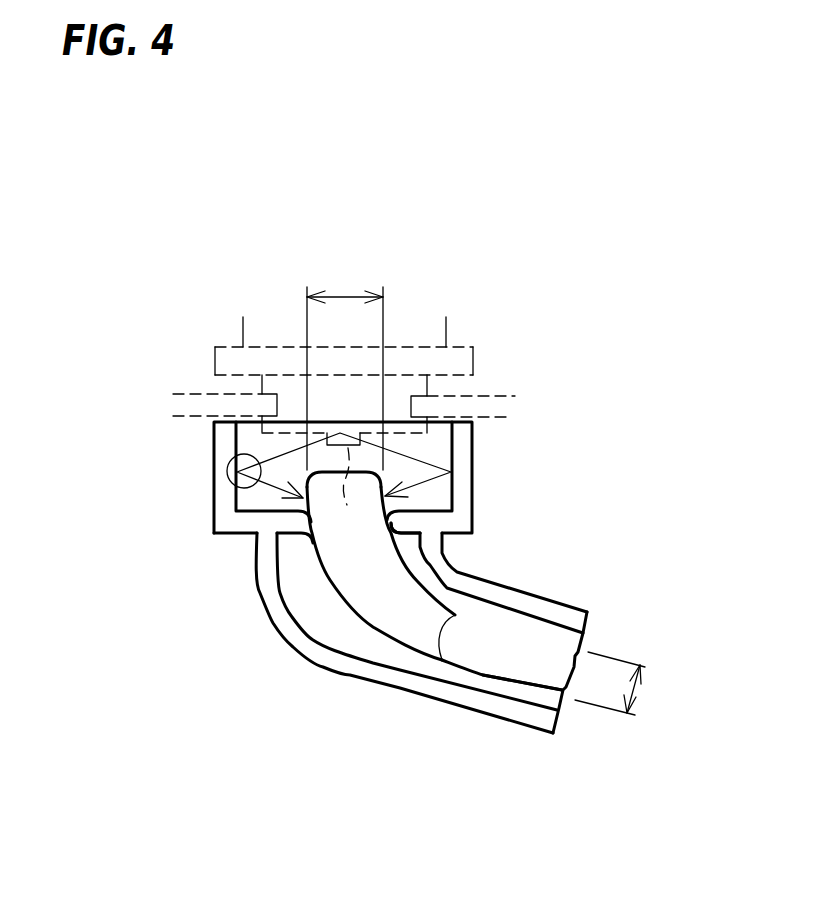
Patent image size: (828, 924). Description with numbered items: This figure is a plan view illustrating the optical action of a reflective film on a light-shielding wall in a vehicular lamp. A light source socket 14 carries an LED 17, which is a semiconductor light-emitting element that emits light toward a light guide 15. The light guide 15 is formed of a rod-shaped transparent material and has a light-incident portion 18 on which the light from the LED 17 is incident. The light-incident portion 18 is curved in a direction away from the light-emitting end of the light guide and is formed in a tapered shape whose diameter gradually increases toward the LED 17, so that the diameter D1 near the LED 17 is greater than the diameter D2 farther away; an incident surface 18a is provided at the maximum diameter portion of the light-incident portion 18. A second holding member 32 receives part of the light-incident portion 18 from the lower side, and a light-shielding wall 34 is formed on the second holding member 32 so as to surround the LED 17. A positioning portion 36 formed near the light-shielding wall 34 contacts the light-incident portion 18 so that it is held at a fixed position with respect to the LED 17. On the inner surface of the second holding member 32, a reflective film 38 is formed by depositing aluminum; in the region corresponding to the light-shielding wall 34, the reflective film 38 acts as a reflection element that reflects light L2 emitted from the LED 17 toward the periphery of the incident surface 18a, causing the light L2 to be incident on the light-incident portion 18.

The light source socket 14 is at (475, 360).
The light guide 15 is at (487, 675).
The LED 17 is at (381, 554).
The light-incident portion 18 is at (342, 558).
The incident surface 18a is at (366, 478).
The second holding member 32 is at (342, 678).
The light-shielding wall 34 is at (225, 442).
The positioning portion 36 is at (400, 525).
The reflective film 38 is at (238, 473).
The maximum diameter of light-incident portion D1 is at (345, 362).
The smaller diameter of light-incident portion D2 is at (635, 687).
The light L2 is at (413, 457).